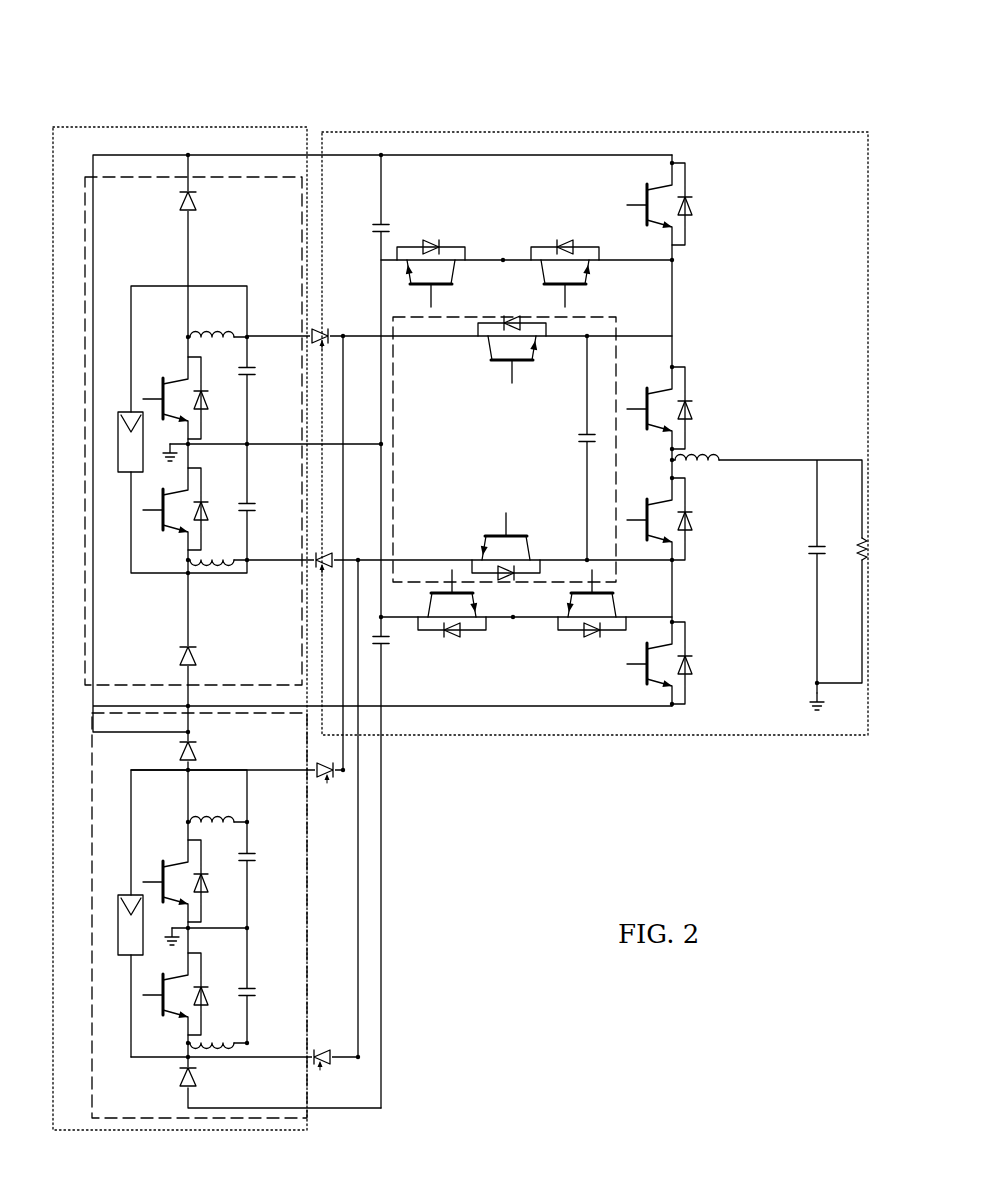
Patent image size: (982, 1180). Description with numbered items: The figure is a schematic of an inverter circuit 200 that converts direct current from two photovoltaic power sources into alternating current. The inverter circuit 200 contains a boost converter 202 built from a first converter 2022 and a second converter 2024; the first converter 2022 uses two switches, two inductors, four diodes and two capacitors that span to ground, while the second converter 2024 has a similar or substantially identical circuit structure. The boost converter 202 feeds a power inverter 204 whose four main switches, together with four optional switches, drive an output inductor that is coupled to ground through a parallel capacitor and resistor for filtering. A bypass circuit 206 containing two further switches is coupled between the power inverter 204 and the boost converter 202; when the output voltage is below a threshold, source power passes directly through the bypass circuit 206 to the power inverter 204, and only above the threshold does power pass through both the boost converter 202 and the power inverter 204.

The inverter circuit 200 is at (122, 58).
The boost converter 202 is at (208, 122).
The power inverter 204 is at (536, 125).
The bypass circuit 206 is at (628, 316).
The first converter 2022 is at (108, 172).
The second converter 2024 is at (78, 785).